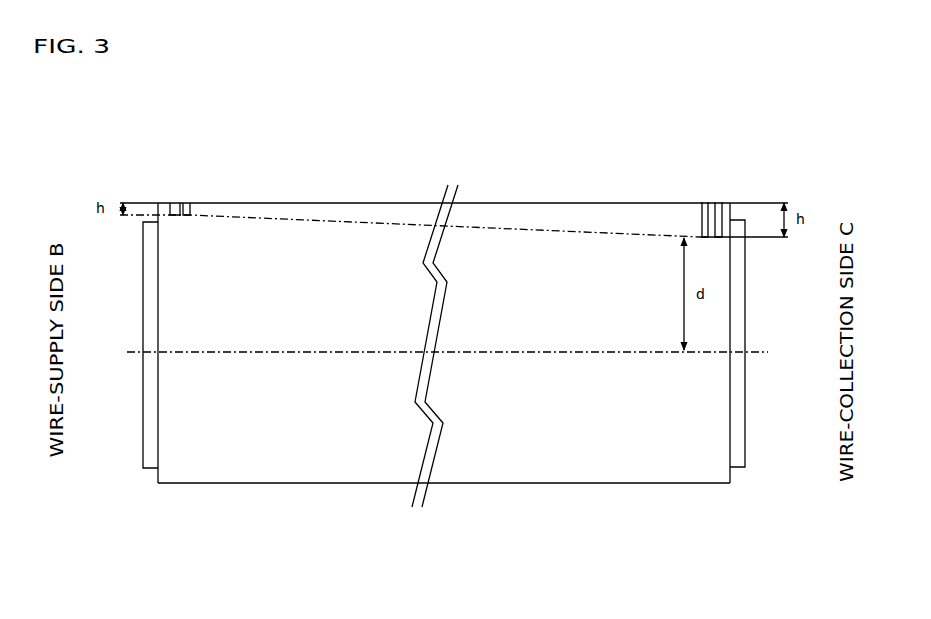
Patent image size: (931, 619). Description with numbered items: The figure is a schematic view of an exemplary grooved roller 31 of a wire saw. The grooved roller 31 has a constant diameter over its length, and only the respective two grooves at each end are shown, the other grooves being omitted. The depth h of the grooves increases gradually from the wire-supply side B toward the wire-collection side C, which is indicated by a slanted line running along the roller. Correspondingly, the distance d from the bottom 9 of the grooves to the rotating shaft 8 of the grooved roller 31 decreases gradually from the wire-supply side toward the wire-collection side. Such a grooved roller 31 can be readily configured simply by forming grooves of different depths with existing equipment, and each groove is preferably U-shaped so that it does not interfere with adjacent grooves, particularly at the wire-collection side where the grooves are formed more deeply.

The grooved roller 31 is at (250, 172).
The rotating shaft 8 is at (288, 353).
The bottom 9 is at (714, 233).